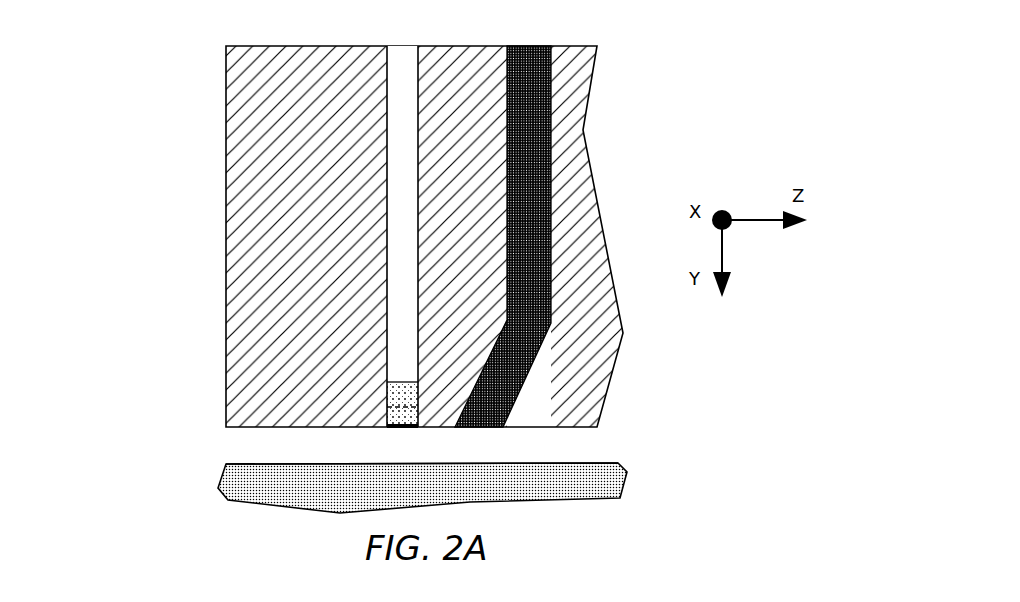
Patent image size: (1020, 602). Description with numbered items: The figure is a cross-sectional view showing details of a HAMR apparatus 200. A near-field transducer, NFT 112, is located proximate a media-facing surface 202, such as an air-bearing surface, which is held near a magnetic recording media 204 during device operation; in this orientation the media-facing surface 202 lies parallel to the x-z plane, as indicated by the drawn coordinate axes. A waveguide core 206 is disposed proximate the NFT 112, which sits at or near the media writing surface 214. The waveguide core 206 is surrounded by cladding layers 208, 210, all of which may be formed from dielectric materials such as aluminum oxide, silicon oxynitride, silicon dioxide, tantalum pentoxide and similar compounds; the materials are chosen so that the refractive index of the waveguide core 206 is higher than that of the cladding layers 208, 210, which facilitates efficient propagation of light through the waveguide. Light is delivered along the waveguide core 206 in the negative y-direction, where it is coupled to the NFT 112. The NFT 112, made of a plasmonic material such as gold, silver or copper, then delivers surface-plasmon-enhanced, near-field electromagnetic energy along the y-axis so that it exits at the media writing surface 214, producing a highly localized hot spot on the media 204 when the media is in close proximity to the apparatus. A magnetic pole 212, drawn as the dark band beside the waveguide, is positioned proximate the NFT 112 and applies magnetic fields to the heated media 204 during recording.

The HAMR apparatus 200 is at (128, 40).
The media-facing surface 202 is at (390, 241).
The magnetic recording media 204 is at (615, 474).
The waveguide core 206 is at (411, 170).
The cladding layer 208 is at (232, 86).
The cladding layer 210 is at (457, 48).
The magnetic pole 212 is at (526, 46).
The media writing surface 214 is at (570, 463).
The NFT 112 is at (413, 430).